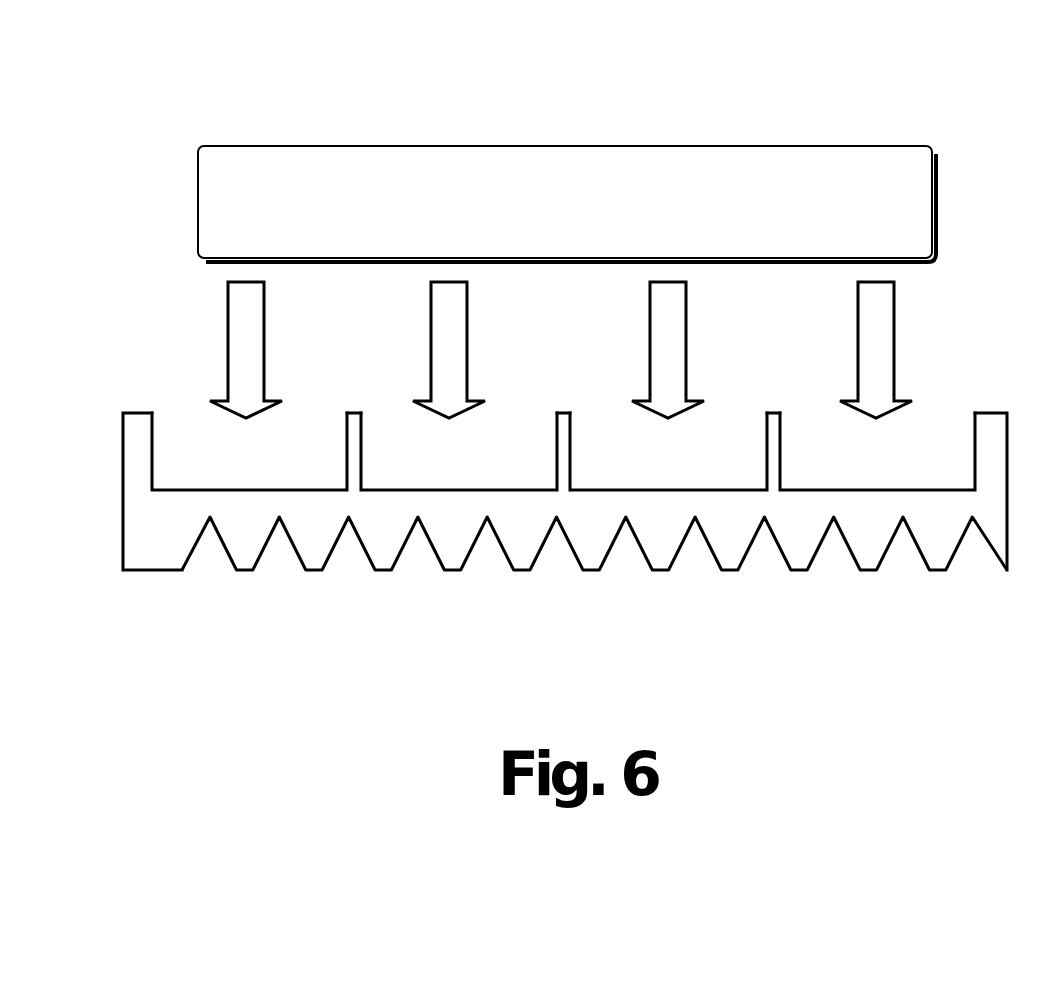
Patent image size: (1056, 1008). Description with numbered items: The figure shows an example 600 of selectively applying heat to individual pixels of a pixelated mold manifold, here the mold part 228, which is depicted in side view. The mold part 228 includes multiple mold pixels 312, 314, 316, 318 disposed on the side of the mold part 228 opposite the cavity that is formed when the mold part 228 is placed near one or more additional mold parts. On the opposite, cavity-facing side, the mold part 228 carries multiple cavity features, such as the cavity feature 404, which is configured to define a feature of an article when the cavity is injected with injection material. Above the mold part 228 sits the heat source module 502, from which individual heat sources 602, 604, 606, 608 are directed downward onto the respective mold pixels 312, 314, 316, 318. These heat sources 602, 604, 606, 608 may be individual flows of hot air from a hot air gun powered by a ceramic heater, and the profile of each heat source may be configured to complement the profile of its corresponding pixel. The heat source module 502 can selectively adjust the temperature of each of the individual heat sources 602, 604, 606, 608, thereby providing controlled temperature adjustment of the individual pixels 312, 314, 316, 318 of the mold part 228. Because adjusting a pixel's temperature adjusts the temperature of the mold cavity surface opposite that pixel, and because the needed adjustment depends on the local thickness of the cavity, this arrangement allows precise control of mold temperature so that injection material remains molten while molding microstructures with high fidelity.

The example of selectively applying heat to a pixelated mold manifold 600 is at (110, 56).
The heat source module 502 is at (712, 217).
The heat source 602 is at (228, 346).
The heat source 604 is at (431, 352).
The heat source 606 is at (650, 353).
The heat source 608 is at (858, 350).
The mold part 228 is at (122, 552).
The cavity feature 404 is at (979, 537).
The mold pixel 312 is at (245, 476).
The mold pixel 314 is at (445, 476).
The mold pixel 316 is at (645, 476).
The mold pixel 318 is at (845, 476).